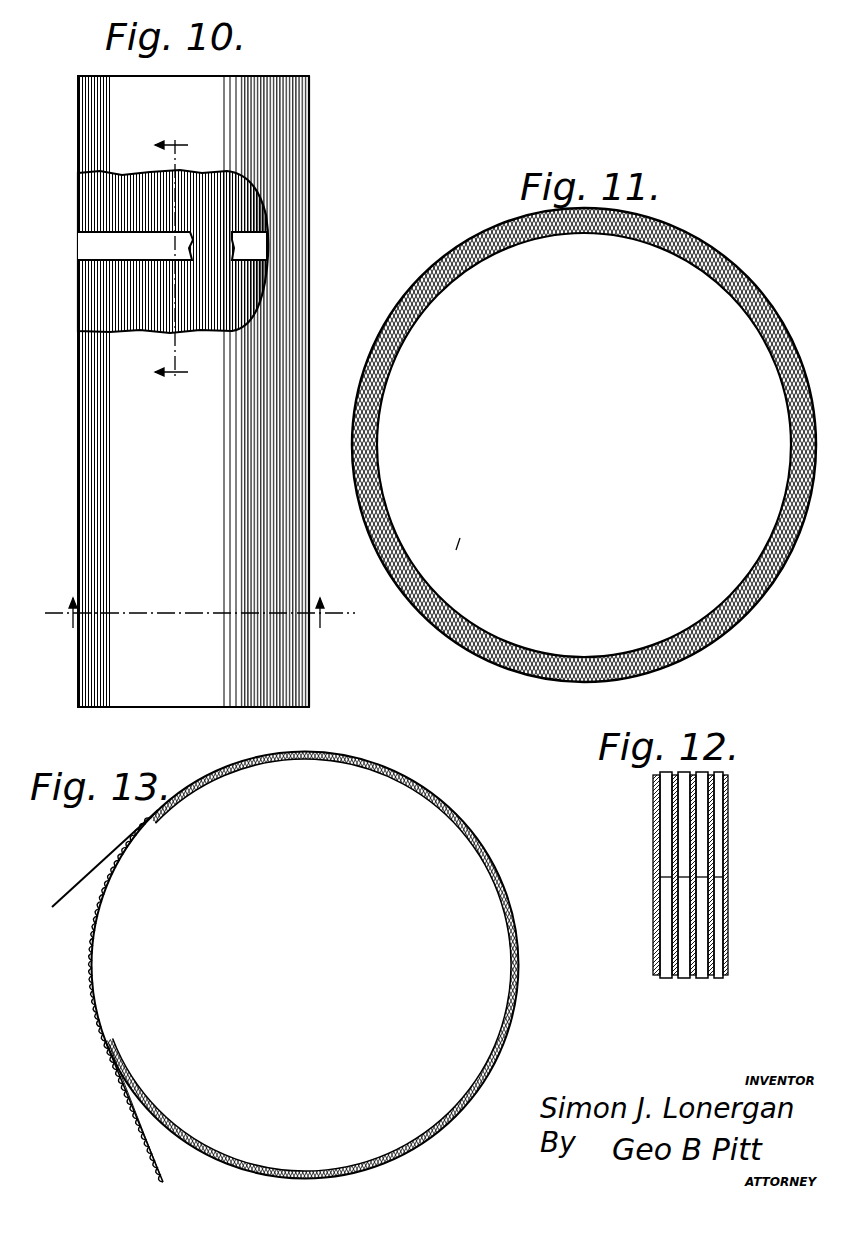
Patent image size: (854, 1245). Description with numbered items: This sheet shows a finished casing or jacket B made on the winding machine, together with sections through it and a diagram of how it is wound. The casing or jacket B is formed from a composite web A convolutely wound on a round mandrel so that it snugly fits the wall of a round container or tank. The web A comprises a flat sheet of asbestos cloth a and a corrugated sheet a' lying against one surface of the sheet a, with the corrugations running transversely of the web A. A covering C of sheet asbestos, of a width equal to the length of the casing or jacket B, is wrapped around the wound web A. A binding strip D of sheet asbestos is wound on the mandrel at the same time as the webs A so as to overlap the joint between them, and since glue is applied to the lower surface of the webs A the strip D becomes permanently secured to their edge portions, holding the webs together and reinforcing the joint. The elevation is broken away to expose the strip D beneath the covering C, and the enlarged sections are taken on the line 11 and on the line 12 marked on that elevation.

In FIG. 13, the web A is at (140, 1148).
In FIG. 10, the casing or jacket B is at (320, 391).
In FIG. 11, the casing or jacket B is at (434, 531).
In FIG. 10, the covering of sheet material C is at (80, 374).
In FIG. 11, the covering of sheet material C is at (386, 320).
In FIG. 12, the covering of sheet material C is at (655, 978).
In FIG. 10, the binding strip D is at (80, 238).
In FIG. 13, the binding strip D is at (88, 872).
In FIG. 12, the binding strip D is at (712, 940).
In FIG. 11, the sheet of asbestos cloth a is at (584, 445).
In FIG. 13, the sheet of asbestos cloth a is at (305, 965).
In FIG. 12, the sheet of asbestos cloth a is at (710, 875).
In FIG. 10, the corrugated sheet a' is at (158, 251).
In FIG. 11, the corrugated sheet a' is at (408, 370).
In FIG. 13, the corrugated sheet a' is at (110, 1000).
In FIG. 12, the corrugated sheet a' is at (712, 993).
In FIG. 10, the section line 11— 11 is at (198, 613).
In FIG. 10, the section line 12— 12 is at (171, 258).